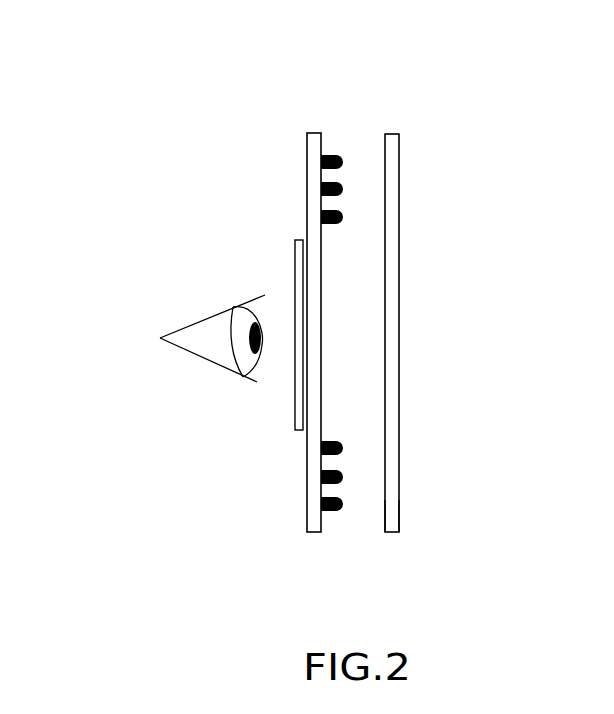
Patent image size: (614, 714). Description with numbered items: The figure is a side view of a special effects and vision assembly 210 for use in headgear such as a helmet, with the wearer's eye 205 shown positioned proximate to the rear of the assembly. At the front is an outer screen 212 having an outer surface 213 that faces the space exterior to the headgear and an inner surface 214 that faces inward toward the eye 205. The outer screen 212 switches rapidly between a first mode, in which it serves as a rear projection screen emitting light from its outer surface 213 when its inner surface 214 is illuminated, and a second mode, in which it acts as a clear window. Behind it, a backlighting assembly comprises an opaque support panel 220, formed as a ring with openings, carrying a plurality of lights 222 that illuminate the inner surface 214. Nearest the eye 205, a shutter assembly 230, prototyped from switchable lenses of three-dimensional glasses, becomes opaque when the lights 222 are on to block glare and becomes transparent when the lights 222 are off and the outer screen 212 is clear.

The eye 205 is at (160, 338).
The special effects and vision assembly 210 is at (265, 560).
The outer screen 212 is at (399, 150).
The outer surface 213 is at (399, 522).
The inner surface 214 is at (385, 505).
The support panel 220 is at (307, 133).
The lights 222 is at (342, 218).
The shutter assembly 230 is at (295, 252).